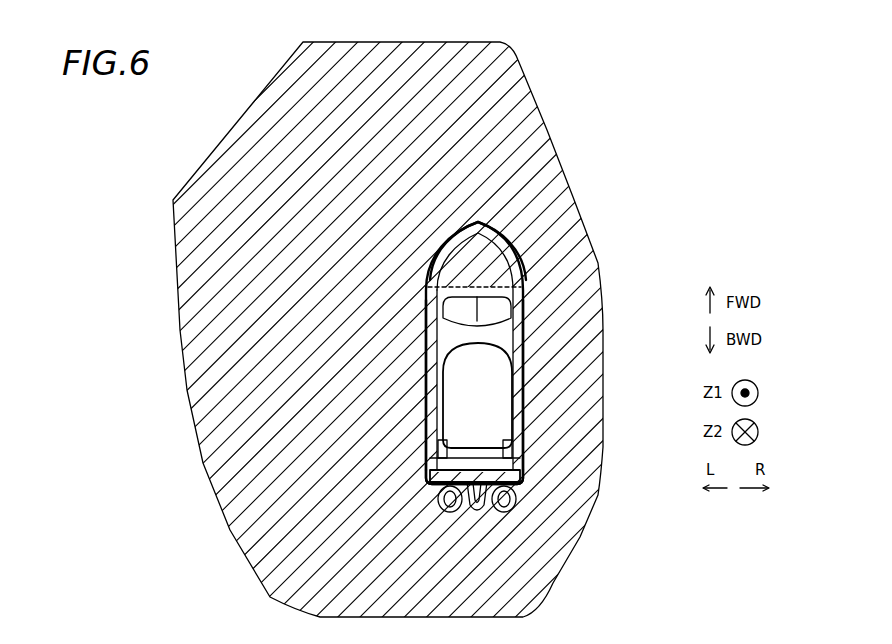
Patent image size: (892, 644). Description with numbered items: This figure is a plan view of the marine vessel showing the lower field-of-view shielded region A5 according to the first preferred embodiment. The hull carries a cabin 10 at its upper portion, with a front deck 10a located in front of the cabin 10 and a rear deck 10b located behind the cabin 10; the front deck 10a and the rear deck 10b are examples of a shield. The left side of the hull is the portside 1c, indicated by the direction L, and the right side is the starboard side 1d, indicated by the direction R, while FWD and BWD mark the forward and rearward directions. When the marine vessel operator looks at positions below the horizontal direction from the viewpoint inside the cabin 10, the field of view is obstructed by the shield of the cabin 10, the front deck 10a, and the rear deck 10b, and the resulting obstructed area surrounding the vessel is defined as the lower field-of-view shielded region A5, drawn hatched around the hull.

The lower field-of-view shielded region A5 is at (446, 322).
The cabin 10 is at (528, 323).
The front deck 10a is at (469, 225).
The rear deck 10b is at (528, 482).
The portside 1c is at (424, 362).
The starboard side 1d is at (527, 388).